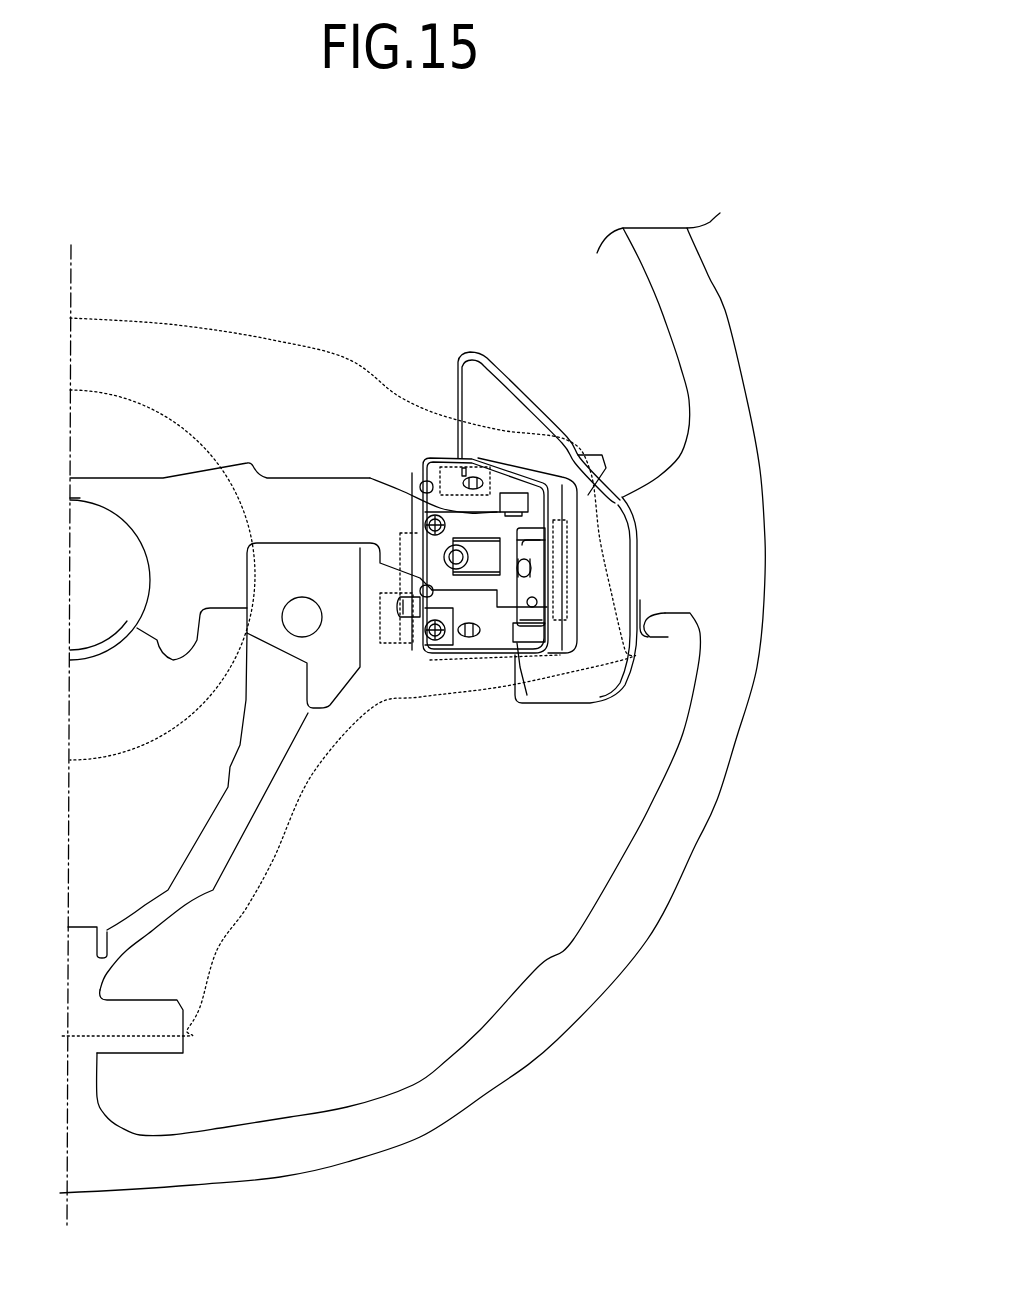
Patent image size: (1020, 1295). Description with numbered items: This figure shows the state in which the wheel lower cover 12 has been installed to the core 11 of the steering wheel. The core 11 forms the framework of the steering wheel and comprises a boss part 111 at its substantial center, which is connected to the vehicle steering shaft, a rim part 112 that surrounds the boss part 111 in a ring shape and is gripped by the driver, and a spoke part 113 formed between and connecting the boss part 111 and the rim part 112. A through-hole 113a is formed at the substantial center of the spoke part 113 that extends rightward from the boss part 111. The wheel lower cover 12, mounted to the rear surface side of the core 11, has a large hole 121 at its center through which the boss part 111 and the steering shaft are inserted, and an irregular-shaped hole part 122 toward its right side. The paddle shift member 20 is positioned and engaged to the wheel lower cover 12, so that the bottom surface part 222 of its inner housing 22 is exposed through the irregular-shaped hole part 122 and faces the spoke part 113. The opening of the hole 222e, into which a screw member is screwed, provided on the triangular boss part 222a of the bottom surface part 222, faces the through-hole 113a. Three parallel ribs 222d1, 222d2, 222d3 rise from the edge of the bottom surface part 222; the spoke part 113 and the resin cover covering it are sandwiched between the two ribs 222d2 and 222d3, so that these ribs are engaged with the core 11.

The core 11 is at (727, 311).
The wheel lower cover 12 is at (273, 340).
The paddle shift member 20 is at (553, 357).
The inner housing 22 is at (562, 477).
The boss part 111 is at (112, 495).
The rim part 112 is at (548, 1022).
The spoke part 113 is at (193, 885).
The through-hole 113a is at (412, 473).
The large hole 121 is at (146, 403).
The irregular-shaped hole part 122 is at (410, 647).
The bottom surface part 222 is at (490, 637).
The boss part 222a is at (485, 563).
The rib 222d1 is at (533, 542).
The rib 222d2 is at (533, 583).
The rib 222d3 is at (513, 642).
The hole 222e is at (470, 550).